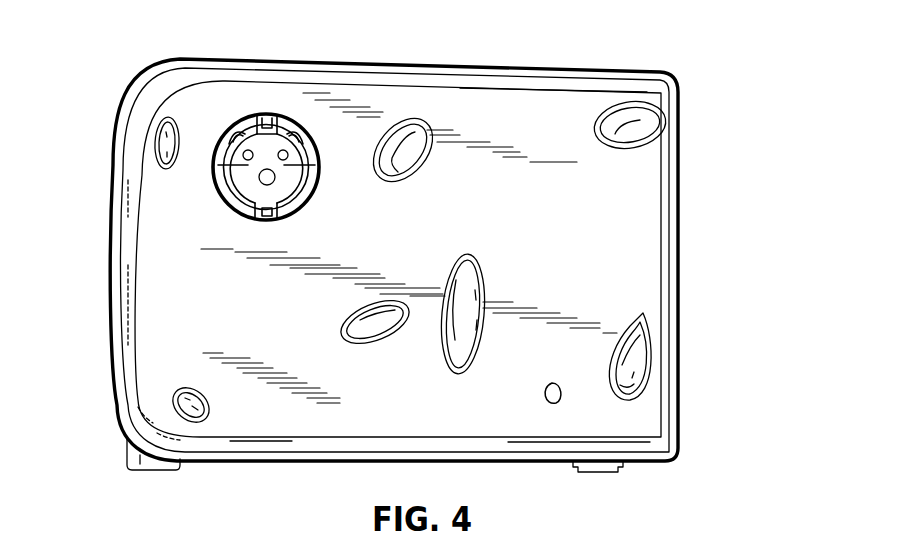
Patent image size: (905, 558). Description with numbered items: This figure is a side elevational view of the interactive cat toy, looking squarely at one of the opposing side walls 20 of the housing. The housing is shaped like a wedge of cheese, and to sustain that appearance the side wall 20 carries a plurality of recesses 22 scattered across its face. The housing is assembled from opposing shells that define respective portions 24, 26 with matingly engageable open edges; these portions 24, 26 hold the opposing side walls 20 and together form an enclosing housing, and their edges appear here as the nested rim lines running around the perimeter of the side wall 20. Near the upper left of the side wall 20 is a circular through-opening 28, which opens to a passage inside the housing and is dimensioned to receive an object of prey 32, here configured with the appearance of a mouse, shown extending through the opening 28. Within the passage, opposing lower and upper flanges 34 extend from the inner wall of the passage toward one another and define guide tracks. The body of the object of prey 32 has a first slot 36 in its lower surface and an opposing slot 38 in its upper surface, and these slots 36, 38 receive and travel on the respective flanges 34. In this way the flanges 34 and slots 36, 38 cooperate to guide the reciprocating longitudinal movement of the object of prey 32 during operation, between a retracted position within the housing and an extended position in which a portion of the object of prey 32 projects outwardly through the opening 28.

The side wall 20 is at (160, 368).
The recess 22 is at (650, 128).
The housing portion 24 is at (127, 347).
The housing portion 26 is at (125, 272).
The through-opening 28 is at (287, 113).
The object of prey 32 is at (247, 188).
The flange 34 is at (265, 113).
The first slot 36 is at (248, 212).
The opposing slot 38 is at (238, 123).